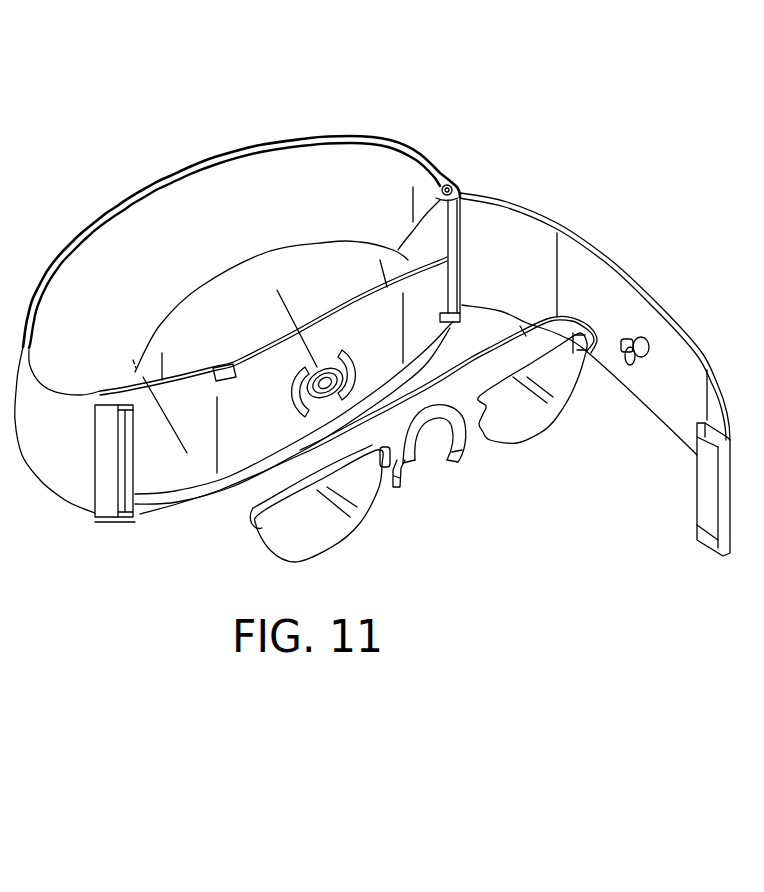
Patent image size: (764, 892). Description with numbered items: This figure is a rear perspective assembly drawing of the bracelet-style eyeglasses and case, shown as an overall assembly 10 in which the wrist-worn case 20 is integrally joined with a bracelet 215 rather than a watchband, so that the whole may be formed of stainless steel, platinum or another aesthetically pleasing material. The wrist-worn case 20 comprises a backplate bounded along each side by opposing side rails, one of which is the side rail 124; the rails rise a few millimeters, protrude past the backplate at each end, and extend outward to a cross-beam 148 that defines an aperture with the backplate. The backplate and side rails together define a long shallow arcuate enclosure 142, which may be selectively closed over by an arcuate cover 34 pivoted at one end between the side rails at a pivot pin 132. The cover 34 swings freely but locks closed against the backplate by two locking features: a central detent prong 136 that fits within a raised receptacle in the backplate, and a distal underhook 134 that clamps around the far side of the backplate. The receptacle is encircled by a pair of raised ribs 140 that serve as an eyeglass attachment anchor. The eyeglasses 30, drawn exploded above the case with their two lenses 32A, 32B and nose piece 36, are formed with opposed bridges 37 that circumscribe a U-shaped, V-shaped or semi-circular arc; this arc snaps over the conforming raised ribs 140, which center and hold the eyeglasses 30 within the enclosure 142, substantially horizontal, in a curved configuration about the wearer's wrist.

The head mounted display system 10 is at (21, 90).
The bracelet 215 is at (302, 137).
The cross-beam 148 is at (405, 175).
The pivot pin 132 is at (445, 183).
The wrist-worn case 20 is at (171, 530).
The enclosure 142 is at (248, 442).
The side rail 124 is at (133, 522).
The raised ribs 140 is at (290, 387).
The arcuate cover 34 is at (510, 202).
The distal underhook 134 is at (697, 540).
The central detent prong 136 is at (647, 347).
The eyeglasses 30 is at (475, 467).
The right lens 32B is at (553, 413).
The left lens 32A is at (357, 527).
The nose bridge 36 is at (420, 437).
The bridges 37 is at (395, 490).